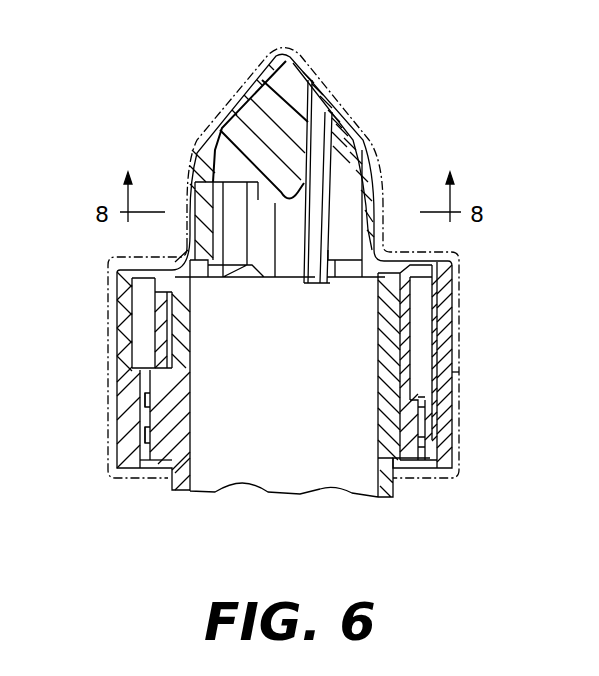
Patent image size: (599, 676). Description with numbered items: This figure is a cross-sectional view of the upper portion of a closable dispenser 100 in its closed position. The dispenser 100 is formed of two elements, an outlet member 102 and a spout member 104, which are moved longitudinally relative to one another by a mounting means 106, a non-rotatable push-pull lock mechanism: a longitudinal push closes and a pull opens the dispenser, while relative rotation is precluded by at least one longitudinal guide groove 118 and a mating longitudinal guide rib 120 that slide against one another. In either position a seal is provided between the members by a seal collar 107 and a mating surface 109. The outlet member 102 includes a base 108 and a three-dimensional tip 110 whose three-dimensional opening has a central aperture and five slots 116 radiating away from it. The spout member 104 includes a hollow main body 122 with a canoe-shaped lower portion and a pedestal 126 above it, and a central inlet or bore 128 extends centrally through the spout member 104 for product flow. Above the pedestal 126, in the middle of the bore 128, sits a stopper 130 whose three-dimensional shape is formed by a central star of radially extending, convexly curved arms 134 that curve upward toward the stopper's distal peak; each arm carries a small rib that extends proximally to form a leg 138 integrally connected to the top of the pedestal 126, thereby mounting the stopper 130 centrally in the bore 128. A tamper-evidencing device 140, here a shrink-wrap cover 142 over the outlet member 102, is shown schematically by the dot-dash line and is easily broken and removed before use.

The closable dispenser 100 is at (392, 70).
The outlet member 102 is at (466, 340).
The spout member 104 is at (166, 487).
The mounting means 106 is at (424, 328).
The seal collar 107 is at (160, 346).
The base 108 is at (136, 376).
The mating surface 109 is at (178, 338).
The 3-D tip 110 is at (374, 126).
The slots 116 is at (206, 152).
The longitudinal guide groove 118 is at (170, 384).
The longitudinal guide rib 120 is at (172, 430).
The hollow main body 122 is at (391, 485).
The pedestal 126 is at (395, 483).
The central inlet or bore 128 is at (316, 467).
The stopper 130 is at (257, 92).
The arms 134 is at (318, 120).
The leg 138 is at (223, 297).
The tamper-evidencing device 140 is at (468, 425).
The shrink-wrap cover 142 is at (473, 372).